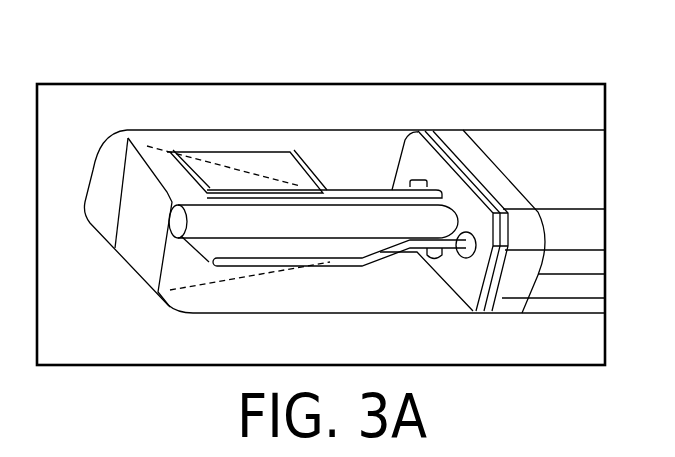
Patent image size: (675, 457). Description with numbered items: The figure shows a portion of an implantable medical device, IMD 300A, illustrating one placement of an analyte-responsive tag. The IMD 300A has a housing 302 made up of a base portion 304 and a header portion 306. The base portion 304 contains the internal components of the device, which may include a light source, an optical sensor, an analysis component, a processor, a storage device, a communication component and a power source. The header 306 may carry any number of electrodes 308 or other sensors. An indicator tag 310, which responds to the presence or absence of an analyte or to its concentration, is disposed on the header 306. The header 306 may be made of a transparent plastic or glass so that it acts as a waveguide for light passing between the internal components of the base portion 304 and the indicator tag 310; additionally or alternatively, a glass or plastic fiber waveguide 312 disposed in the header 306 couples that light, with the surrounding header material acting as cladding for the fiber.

The implantable medical device (IMD) 300A is at (120, 63).
The housing 302 is at (452, 113).
The base portion 304 is at (550, 150).
The header portion 306 is at (337, 145).
The electrodes 308 is at (275, 160).
The indicator tag 310 is at (140, 203).
The waveguide 312 is at (282, 225).